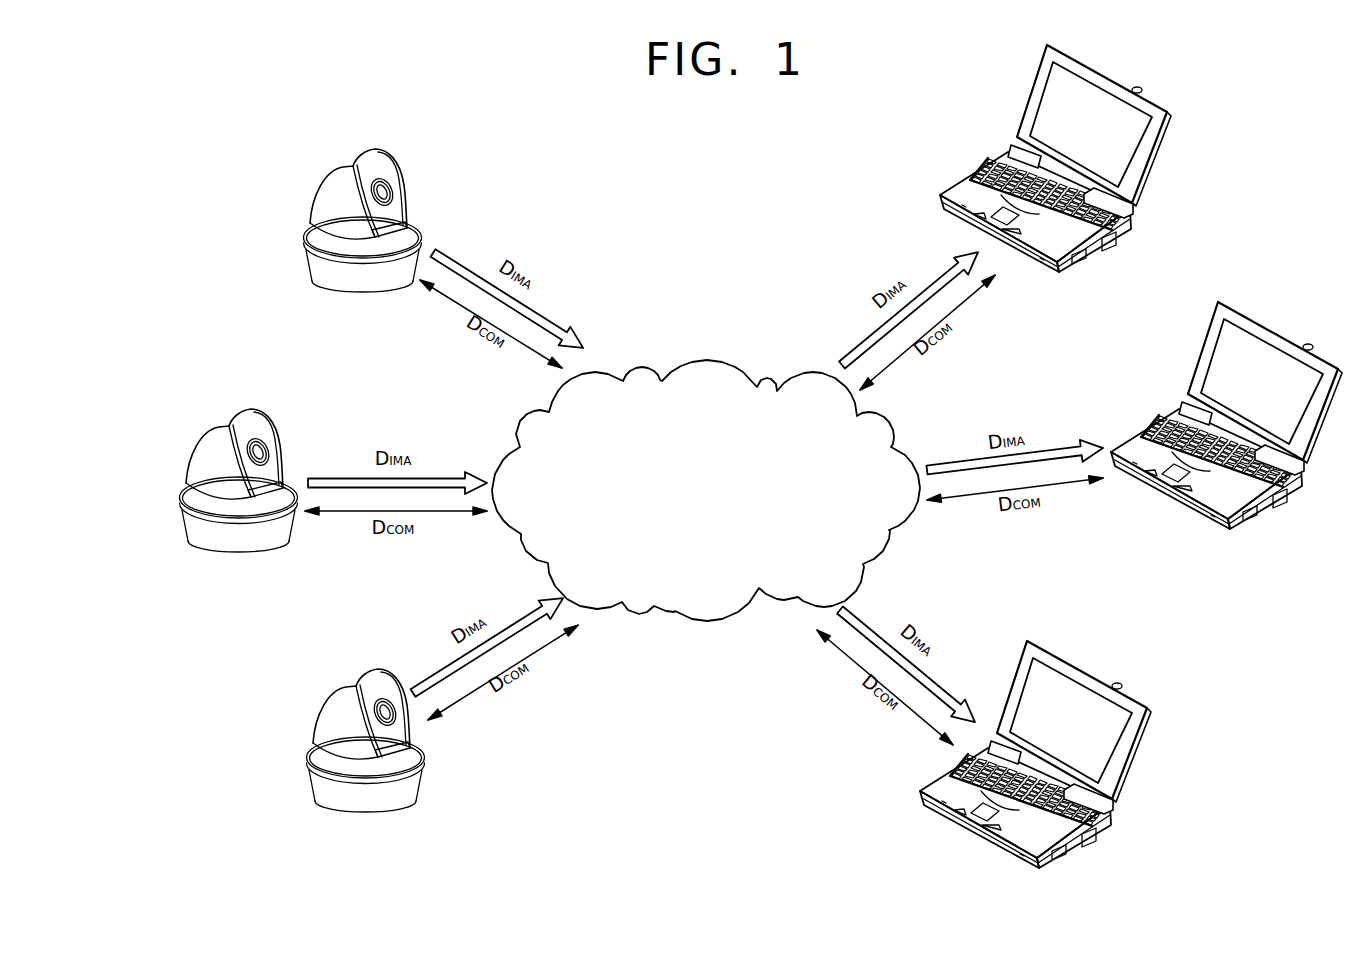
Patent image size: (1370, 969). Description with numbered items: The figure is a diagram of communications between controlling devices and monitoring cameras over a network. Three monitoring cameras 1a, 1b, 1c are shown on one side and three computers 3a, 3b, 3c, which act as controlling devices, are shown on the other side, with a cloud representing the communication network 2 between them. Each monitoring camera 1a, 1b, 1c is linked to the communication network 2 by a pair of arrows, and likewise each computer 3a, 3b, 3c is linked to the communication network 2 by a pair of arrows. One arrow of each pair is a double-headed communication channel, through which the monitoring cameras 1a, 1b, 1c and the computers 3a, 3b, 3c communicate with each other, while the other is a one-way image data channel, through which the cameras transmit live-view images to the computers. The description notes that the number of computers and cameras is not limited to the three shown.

The monitoring camera 1a is at (333, 273).
The monitoring camera 1b is at (210, 537).
The monitoring camera 1c is at (338, 798).
The communication network 2 is at (706, 358).
The computer 3a is at (978, 168).
The computer 3b is at (1152, 425).
The computer 3c is at (942, 785).